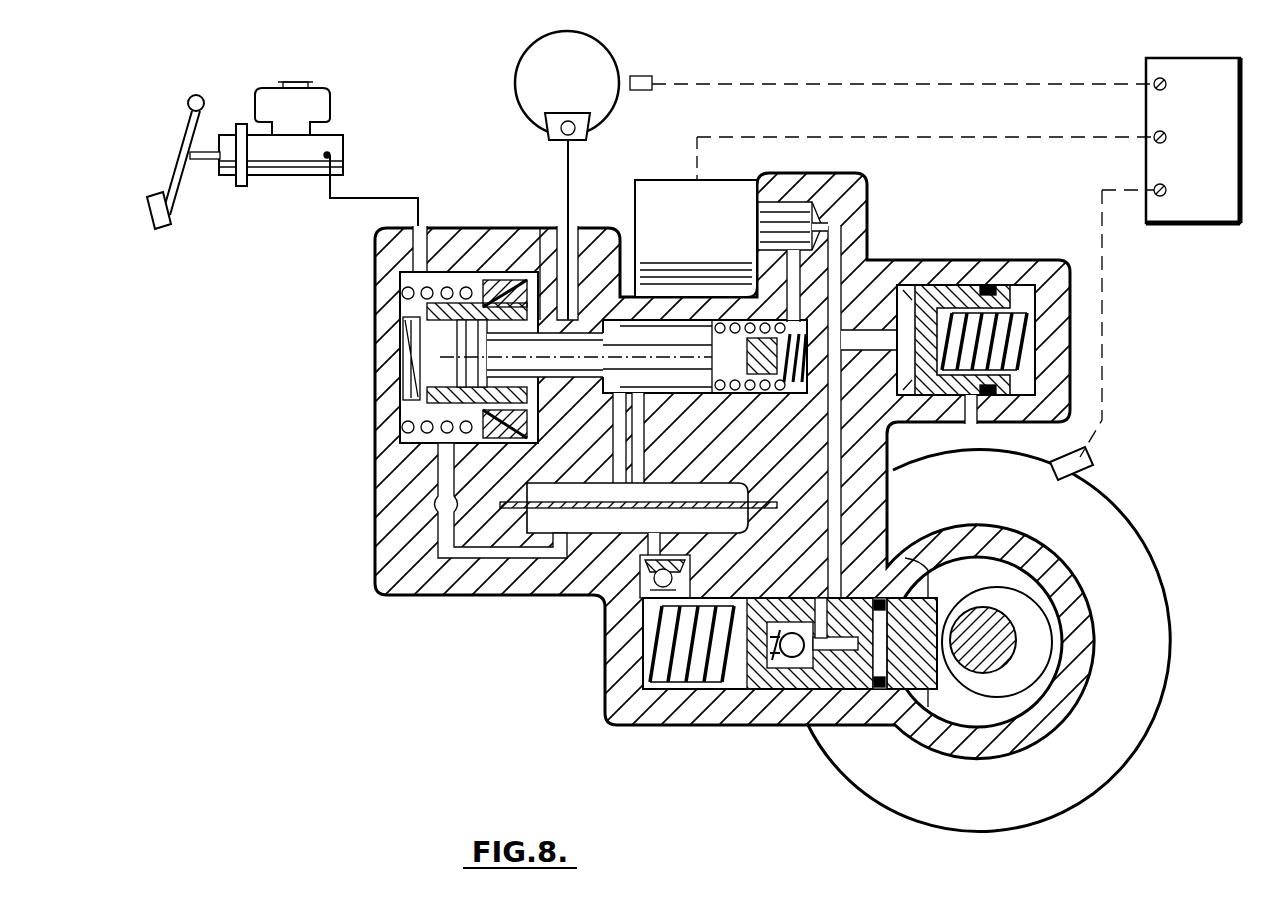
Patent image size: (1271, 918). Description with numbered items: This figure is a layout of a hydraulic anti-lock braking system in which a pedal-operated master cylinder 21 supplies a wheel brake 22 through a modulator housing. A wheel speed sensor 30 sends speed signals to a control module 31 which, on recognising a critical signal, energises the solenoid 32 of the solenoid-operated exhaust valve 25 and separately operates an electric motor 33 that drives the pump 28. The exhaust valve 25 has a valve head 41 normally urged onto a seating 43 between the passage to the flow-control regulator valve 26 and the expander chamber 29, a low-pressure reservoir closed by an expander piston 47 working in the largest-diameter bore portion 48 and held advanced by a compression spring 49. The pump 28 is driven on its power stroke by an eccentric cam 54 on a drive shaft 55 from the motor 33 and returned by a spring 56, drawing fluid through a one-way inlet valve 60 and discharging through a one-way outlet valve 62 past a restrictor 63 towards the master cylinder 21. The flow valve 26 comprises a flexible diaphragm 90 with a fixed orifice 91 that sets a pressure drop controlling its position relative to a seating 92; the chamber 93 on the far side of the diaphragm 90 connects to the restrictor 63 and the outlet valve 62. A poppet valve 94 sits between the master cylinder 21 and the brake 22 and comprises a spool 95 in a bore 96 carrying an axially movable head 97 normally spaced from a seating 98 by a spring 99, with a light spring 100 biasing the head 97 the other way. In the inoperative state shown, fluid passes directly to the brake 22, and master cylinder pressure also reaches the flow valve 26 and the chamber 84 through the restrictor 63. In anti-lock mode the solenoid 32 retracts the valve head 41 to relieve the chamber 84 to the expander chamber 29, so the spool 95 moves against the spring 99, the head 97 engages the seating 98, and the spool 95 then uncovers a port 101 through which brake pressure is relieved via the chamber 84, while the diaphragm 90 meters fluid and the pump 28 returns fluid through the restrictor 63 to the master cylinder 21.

The hydraulic master cylinder 21 is at (284, 152).
The wheel brake 22 is at (545, 120).
The solenoid-operated exhaust valve 25 is at (728, 184).
The flow-control regulator valve 26 is at (614, 522).
The pump 28 is at (808, 690).
The expander chamber 29 is at (900, 297).
The wheel speed sensor 30 is at (652, 78).
The control module 31 is at (1172, 166).
The solenoid 32 is at (672, 226).
The electric motor 33 is at (1090, 525).
The valve head 41 is at (782, 210).
The seating 43 is at (866, 200).
The expander piston 47 is at (955, 288).
The bore portion of largest diameter 48 is at (1030, 295).
The compression spring 49 is at (968, 400).
The eccentric cam 54 is at (1033, 648).
The drive shaft 55 is at (990, 660).
The spring 56 is at (680, 690).
The one-way inlet valve 60 is at (775, 690).
The one-way outlet valve 62 is at (658, 595).
The restrictor 63 is at (440, 504).
The chamber 84 is at (738, 395).
The flexible diaphragm 90 is at (540, 520).
The fixed orifice 91 is at (600, 516).
The seating 92 is at (650, 497).
The chamber 93 is at (680, 516).
The poppet valve 94 is at (425, 368).
The spool 95 is at (640, 345).
The bore 96 is at (682, 335).
The head 97 is at (530, 300).
The seating 98 is at (560, 300).
The spring 99 is at (770, 398).
The light spring 100 is at (405, 292).
The port 101 is at (548, 470).